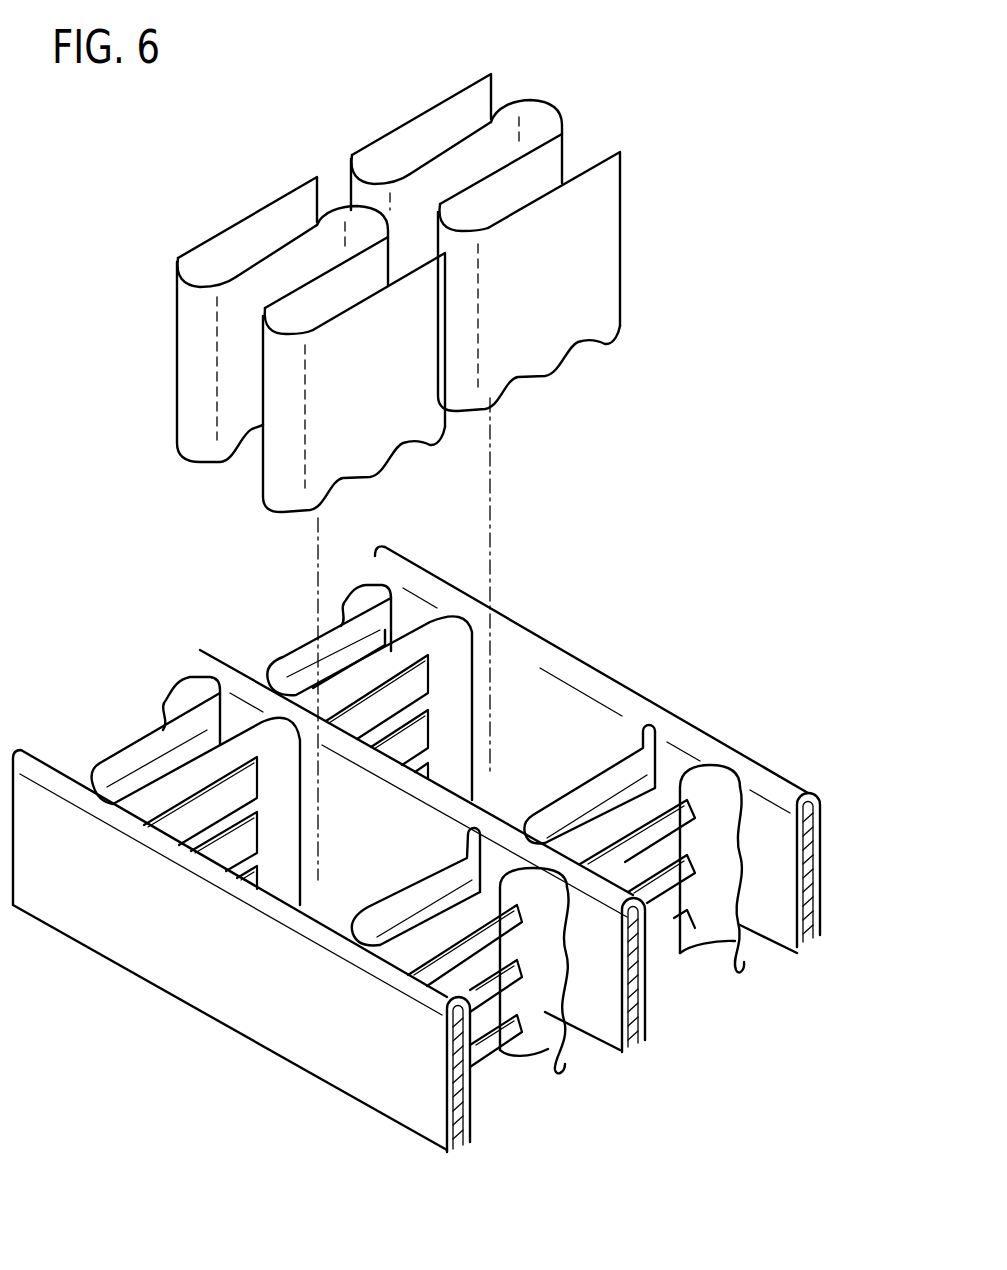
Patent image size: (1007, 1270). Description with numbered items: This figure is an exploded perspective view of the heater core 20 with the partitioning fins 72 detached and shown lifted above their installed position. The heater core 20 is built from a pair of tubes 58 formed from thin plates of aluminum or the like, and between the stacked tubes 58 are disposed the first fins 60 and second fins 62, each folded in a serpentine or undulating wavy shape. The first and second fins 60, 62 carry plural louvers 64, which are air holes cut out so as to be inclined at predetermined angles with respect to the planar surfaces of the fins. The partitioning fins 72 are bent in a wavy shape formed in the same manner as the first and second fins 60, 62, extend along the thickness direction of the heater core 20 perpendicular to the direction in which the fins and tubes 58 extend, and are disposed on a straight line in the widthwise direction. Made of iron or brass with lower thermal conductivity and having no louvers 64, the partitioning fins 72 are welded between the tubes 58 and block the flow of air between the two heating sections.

The heater core 20 is at (416, 830).
The tube 58 is at (230, 670).
The first fin 60 is at (540, 1030).
The second fin 62 is at (155, 757).
The louver 64 is at (137, 790).
The partitioning fin 72 is at (244, 228).